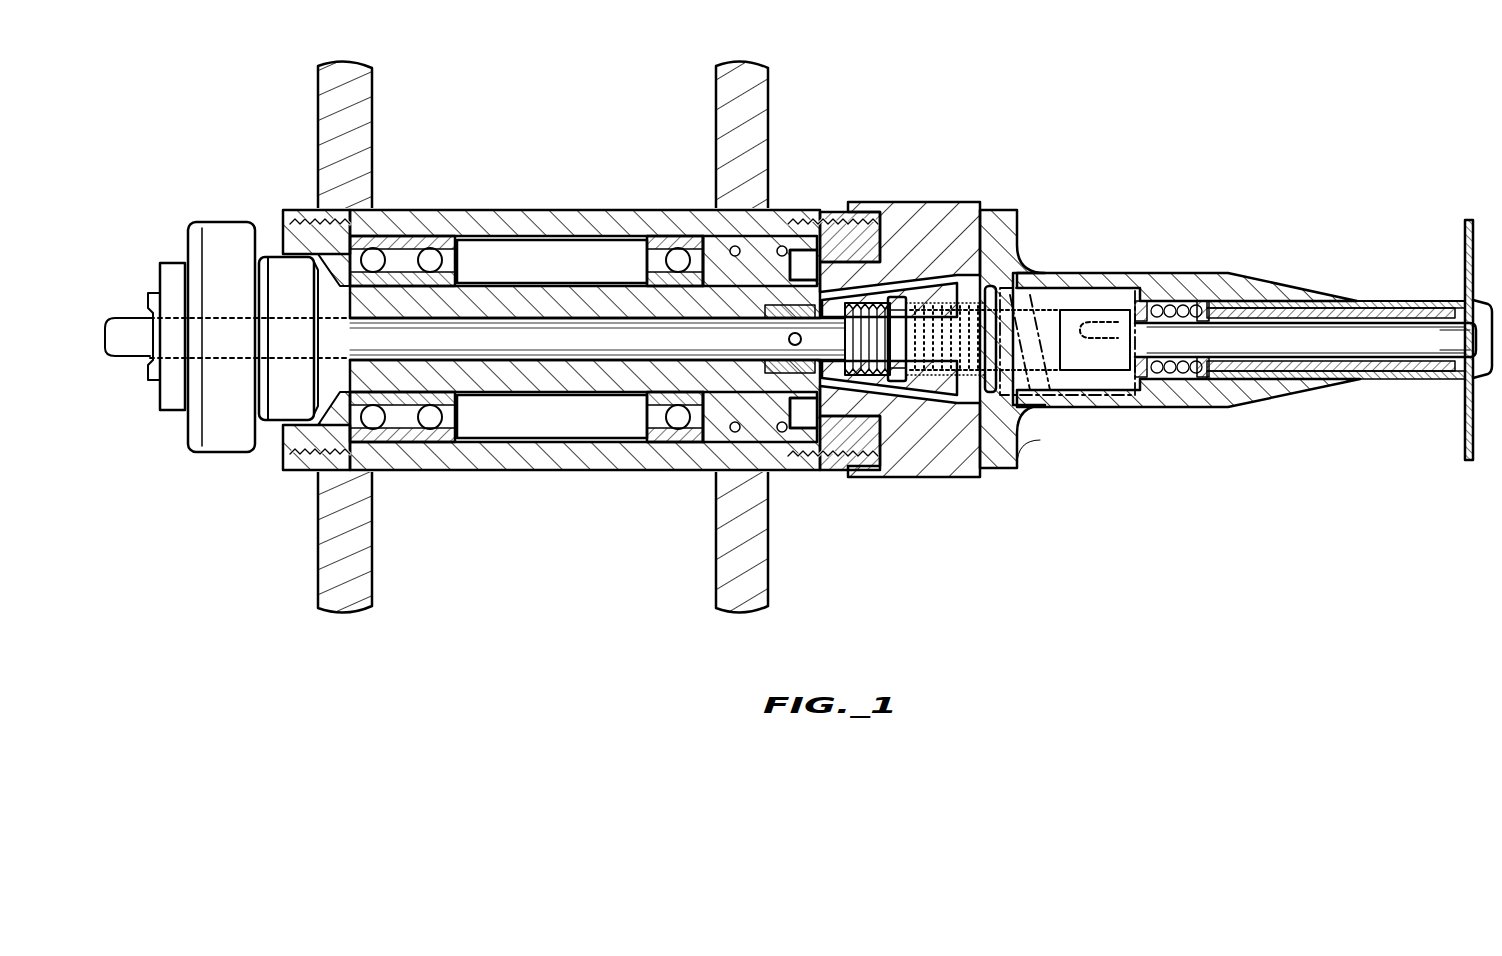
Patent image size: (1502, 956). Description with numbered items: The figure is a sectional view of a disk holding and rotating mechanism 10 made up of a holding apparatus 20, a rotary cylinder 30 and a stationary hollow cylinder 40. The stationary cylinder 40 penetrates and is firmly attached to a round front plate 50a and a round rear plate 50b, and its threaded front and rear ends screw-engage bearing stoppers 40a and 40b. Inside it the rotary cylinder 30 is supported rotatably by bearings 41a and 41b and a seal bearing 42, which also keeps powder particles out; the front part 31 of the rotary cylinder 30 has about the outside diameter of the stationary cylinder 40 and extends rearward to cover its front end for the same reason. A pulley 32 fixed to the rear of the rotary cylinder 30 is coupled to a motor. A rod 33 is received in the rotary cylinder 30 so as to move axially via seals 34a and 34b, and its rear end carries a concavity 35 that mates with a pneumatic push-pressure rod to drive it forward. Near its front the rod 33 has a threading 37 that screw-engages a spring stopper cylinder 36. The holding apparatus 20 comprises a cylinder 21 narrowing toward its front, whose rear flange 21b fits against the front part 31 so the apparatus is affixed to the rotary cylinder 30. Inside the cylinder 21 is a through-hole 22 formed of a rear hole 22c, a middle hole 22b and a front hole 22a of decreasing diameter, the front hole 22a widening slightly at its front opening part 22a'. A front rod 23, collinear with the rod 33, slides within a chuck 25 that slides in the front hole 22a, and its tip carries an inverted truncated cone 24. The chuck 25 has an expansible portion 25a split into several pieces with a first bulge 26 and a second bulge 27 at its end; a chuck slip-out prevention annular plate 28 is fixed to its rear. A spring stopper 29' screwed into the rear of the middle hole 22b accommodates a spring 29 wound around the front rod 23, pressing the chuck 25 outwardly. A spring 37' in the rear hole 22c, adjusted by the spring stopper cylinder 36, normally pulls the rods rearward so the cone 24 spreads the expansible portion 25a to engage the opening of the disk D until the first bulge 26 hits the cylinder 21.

The disk holding and rotating mechanism 10 is at (928, 115).
The holding apparatus 20 is at (1190, 492).
The cylinder 21 is at (1285, 283).
The flange 21b is at (1000, 208).
The through-hole 22 is at (950, 290).
The front hole 22a is at (1305, 414).
The front opening part 22a' is at (1424, 293).
The middle hole 22b is at (1183, 400).
The rear hole 22c is at (1030, 462).
The front rod 23 is at (1140, 396).
The inverted truncated cone 24 is at (1487, 362).
The chuck 25 is at (1265, 372).
The expansible portion 25a is at (1355, 318).
The first bulge 26 is at (1475, 310).
The second bulge 27 is at (1460, 380).
The chuck slip-out prevention annular plate 28 is at (1220, 310).
The spring 29 is at (1213, 278).
The spring stopper 29' is at (1186, 266).
The rotary cylinder 30 is at (532, 272).
The front part 31 is at (893, 196).
The pulley 32 is at (200, 258).
The rod 33 is at (463, 335).
The seal 34a is at (800, 412).
The seal 34b is at (150, 385).
The concavity 35 is at (118, 330).
The spring stopper cylinder 36 is at (930, 412).
The threading 37 is at (975, 412).
The spring 37' is at (1026, 274).
The stationary hollow cylinder 40 is at (565, 455).
The bearing stopper 40a is at (832, 232).
The bearing stopper 40b is at (283, 232).
The bearing 41a is at (650, 265).
The bearing 41b is at (410, 232).
The seal bearing 42 is at (722, 262).
The round front plate 50a is at (725, 542).
The round rear plate 50b is at (335, 545).
The disk D is at (1465, 255).